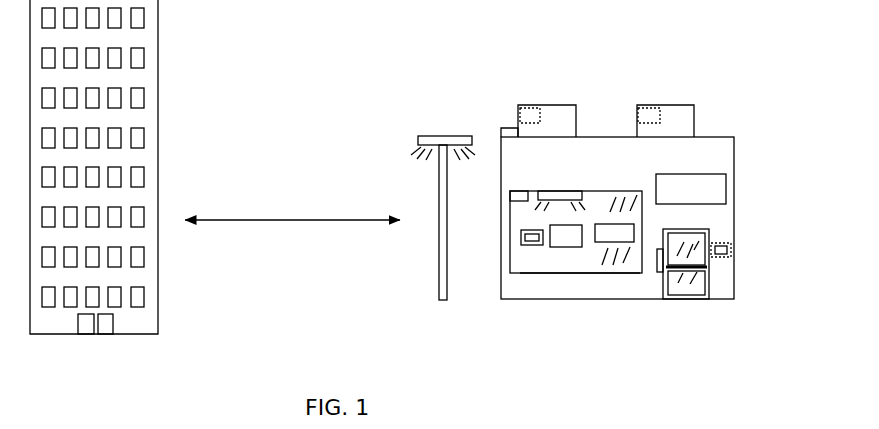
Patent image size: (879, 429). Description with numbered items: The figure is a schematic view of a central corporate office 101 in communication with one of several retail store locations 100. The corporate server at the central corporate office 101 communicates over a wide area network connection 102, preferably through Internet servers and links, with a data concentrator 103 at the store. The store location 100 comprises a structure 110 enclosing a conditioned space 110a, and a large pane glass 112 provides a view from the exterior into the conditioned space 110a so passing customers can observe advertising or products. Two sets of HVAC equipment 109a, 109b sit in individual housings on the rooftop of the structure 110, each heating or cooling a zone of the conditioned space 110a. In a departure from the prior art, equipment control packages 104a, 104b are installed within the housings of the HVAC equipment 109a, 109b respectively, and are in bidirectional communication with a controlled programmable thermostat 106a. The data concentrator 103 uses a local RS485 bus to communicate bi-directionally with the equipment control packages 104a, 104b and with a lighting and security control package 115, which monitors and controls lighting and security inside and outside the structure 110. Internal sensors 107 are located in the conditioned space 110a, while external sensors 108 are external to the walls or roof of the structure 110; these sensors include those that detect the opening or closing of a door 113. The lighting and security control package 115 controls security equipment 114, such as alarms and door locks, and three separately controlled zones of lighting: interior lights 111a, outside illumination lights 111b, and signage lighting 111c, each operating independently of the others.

The retail store location 100 is at (586, 209).
The central corporate office 101 is at (94, 192).
The wide area network connection 102 is at (292, 205).
The data concentrator 103 is at (566, 249).
The equipment control package 104a is at (531, 111).
The equipment control package 104b is at (652, 107).
The controlled programmable thermostat 106a is at (528, 248).
The internal sensors 107 is at (519, 199).
The external sensors 108 is at (503, 126).
The HVAC equipment 109a is at (562, 121).
The HVAC equipment 109b is at (680, 121).
The structure 110 is at (736, 222).
The conditioned space 110a is at (588, 193).
The lighting equipment (first zone) 111a is at (556, 194).
The lighting equipment (second zone) 111b is at (439, 294).
The lighting equipment (third zone) 111c is at (714, 177).
The large pane glass 112 is at (594, 272).
The door 113 is at (682, 284).
The security equipment 114 is at (656, 258).
The lighting and security control package 115 is at (630, 231).